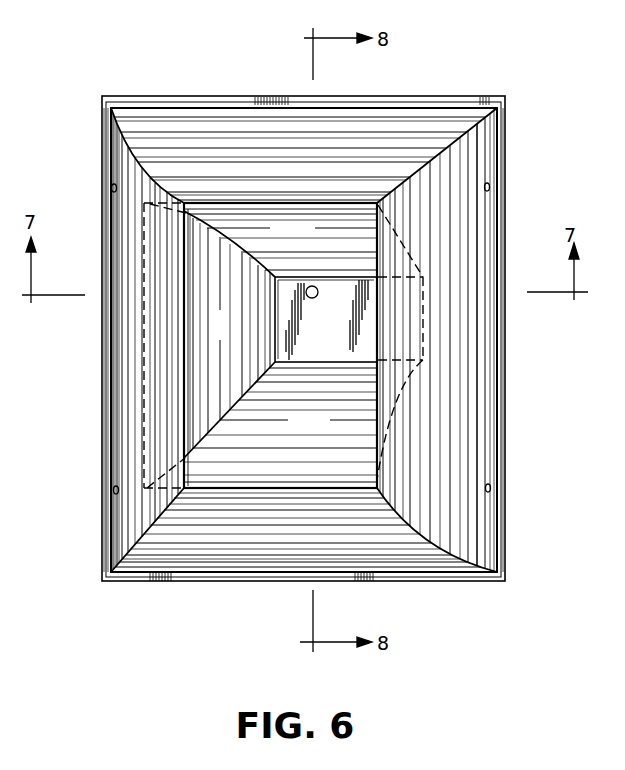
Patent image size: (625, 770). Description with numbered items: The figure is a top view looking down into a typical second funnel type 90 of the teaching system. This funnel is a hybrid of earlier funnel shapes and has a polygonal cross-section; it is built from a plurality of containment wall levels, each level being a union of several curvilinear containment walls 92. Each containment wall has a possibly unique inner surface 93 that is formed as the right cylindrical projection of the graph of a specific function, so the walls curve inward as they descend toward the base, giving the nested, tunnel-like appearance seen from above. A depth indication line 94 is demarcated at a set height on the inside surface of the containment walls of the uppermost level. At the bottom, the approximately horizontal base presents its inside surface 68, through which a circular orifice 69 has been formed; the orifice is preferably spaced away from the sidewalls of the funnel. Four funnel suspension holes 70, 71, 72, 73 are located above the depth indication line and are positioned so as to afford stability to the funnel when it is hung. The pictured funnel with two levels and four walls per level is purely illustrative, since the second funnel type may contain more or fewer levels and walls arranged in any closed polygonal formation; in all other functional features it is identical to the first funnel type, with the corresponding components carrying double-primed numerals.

The second funnel type 90 is at (228, 86).
The curvilinear containment walls 92 is at (410, 96).
The inner surface 93 is at (345, 138).
The depth indication line 94 is at (478, 245).
The inside surface of the base 68 is at (338, 339).
The circular orifice 69 is at (314, 286).
The funnel suspension hole 70 is at (112, 188).
The funnel suspension hole 71 is at (490, 187).
The funnel suspension hole 72 is at (114, 492).
The funnel suspension hole 73 is at (491, 488).